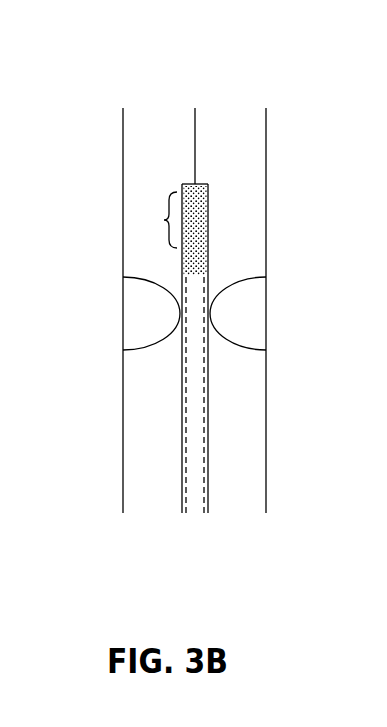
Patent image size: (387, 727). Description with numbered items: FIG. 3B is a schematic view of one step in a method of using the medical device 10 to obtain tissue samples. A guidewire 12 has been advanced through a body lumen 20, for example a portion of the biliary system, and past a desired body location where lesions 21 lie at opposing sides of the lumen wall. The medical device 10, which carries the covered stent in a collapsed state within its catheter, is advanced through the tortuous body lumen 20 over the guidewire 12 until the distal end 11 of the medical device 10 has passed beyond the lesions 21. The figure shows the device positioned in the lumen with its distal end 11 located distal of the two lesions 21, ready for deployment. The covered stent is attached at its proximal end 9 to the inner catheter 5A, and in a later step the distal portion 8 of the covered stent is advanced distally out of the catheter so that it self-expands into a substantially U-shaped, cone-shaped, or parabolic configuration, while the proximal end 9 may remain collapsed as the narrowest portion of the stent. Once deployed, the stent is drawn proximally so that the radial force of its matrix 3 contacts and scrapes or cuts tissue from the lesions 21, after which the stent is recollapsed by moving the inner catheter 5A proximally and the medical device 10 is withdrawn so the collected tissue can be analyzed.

The matrix 3 is at (208, 470).
The inner catheter 5A is at (155, 467).
The distal portion 8 is at (163, 220).
The proximal end 9 is at (203, 250).
The medical device 10 is at (225, 207).
The distal end 11 is at (197, 184).
The guidewire 12 is at (195, 137).
The body lumen 20 is at (228, 112).
The lesions 21 is at (133, 318).